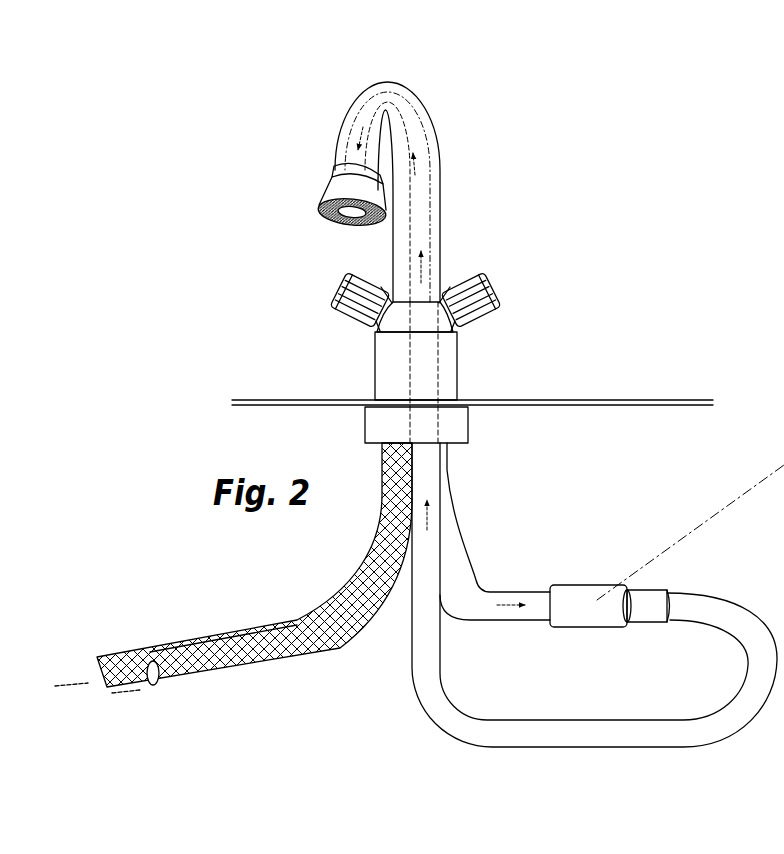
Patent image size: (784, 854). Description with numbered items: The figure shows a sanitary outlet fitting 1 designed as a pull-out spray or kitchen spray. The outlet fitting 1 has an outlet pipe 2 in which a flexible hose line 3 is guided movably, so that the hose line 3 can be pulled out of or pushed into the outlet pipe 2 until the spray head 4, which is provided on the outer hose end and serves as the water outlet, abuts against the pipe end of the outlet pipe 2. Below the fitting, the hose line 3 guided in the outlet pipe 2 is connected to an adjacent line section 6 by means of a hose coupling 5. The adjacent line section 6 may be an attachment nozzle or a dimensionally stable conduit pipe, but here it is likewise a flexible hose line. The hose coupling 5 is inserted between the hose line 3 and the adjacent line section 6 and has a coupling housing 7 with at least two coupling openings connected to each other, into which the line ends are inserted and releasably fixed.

The sanitary outlet fitting 1 is at (522, 168).
The outlet pipe 2 is at (431, 131).
The flexible hose line 3 is at (443, 216).
The spray head 4 is at (334, 183).
The hose coupling 5 is at (605, 548).
The adjacent line section 6 is at (465, 574).
The coupling housing 7 is at (614, 627).